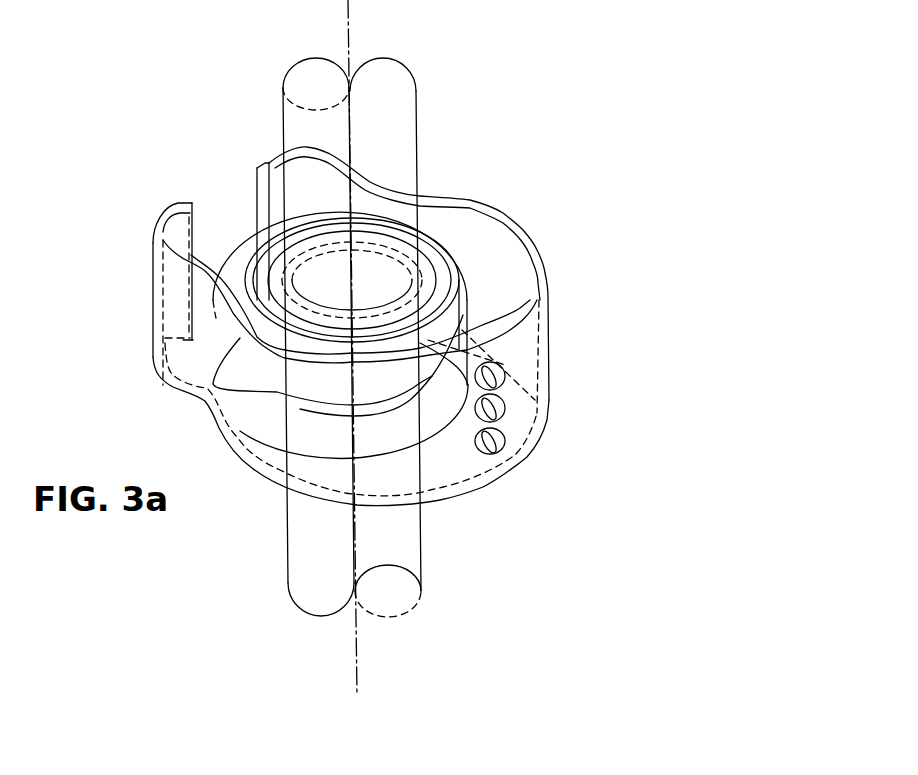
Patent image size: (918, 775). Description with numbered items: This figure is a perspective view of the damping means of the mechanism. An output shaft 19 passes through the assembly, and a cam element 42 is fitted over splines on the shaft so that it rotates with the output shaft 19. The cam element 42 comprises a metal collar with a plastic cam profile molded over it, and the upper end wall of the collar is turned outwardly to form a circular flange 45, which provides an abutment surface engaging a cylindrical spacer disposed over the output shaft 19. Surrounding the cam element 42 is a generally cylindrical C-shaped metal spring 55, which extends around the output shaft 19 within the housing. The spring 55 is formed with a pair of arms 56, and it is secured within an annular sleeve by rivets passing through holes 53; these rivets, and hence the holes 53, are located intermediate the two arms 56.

The output shaft 19 is at (403, 103).
The cam element 42 is at (472, 272).
The circular flange 45 is at (422, 237).
The holes 53 is at (505, 375).
The C-shaped spring 55 is at (503, 217).
The arms 56 is at (270, 158).